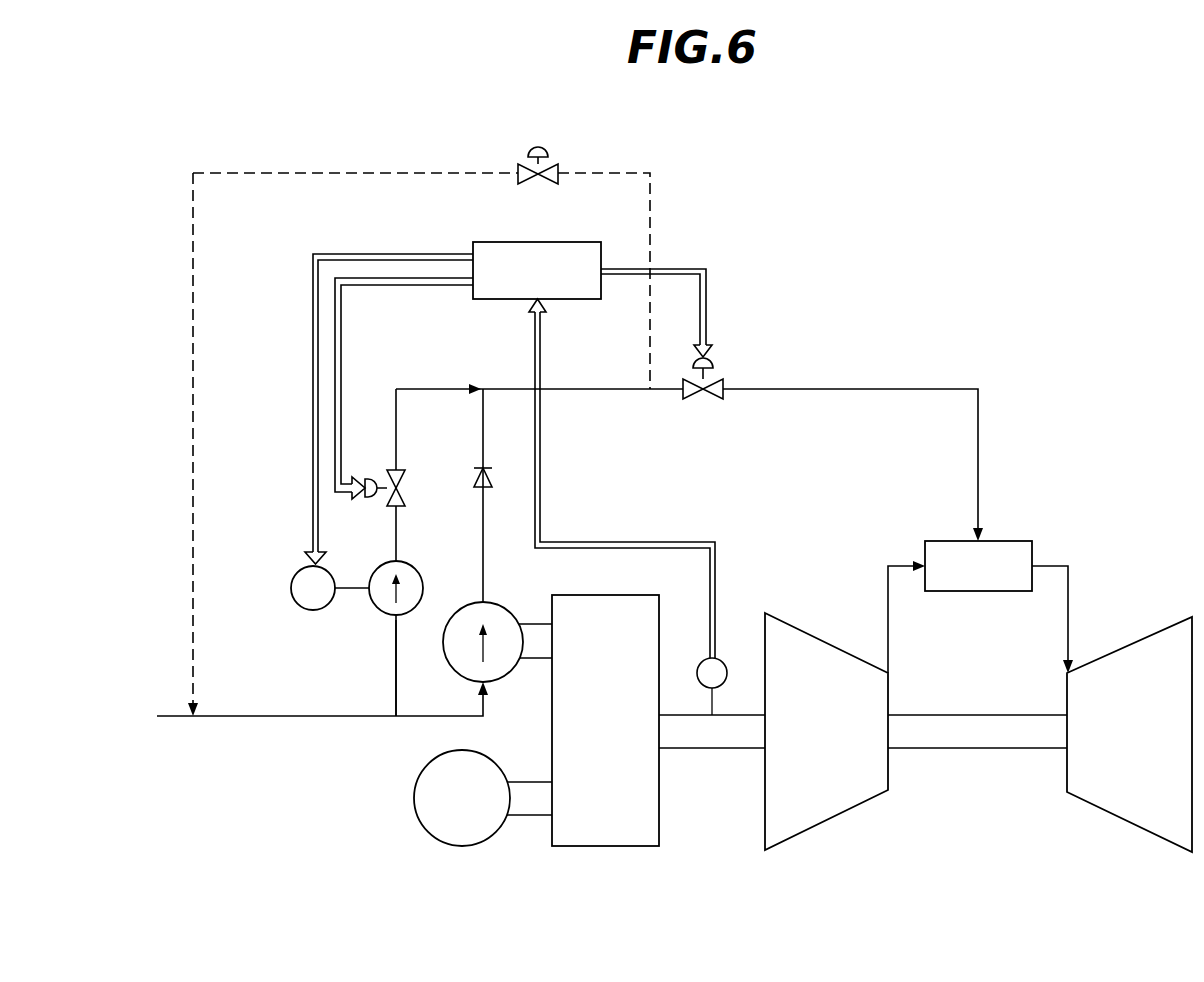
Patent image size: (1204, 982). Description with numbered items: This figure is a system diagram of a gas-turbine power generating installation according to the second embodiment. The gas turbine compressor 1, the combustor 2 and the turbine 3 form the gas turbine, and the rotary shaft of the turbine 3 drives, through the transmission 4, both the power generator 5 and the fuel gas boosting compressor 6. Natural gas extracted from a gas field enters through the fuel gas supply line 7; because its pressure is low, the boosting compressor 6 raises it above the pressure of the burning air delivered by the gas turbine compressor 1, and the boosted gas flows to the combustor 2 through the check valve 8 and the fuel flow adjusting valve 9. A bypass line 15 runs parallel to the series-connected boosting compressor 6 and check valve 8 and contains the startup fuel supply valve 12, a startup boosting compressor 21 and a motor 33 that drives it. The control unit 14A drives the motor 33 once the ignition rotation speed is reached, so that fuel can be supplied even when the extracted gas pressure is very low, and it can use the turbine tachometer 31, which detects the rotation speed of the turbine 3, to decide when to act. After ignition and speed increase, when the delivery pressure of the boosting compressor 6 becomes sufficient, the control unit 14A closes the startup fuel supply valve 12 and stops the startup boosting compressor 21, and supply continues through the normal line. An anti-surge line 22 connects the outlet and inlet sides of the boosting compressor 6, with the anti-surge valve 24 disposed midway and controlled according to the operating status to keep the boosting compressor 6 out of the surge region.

The gas turbine compressor 1 is at (850, 810).
The combustor 2 is at (1012, 541).
The turbine 3 is at (1100, 810).
The transmission 4 is at (605, 846).
The power generator 5 is at (475, 846).
The boosting compressor 6 is at (455, 613).
The fuel gas supply line 7 is at (275, 716).
The check valve 8 is at (490, 468).
The fuel flow adjusting valve 9 is at (709, 400).
The startup fuel supply valve 12 is at (404, 470).
The control unit 14A is at (590, 242).
The bypass line 15 is at (396, 656).
The startup boosting compressor 21 is at (413, 566).
The anti-surge line 22 is at (624, 171).
The anti-surge valve 24 is at (519, 168).
The turbine tachometer 31 is at (701, 662).
The motor 33 is at (298, 571).